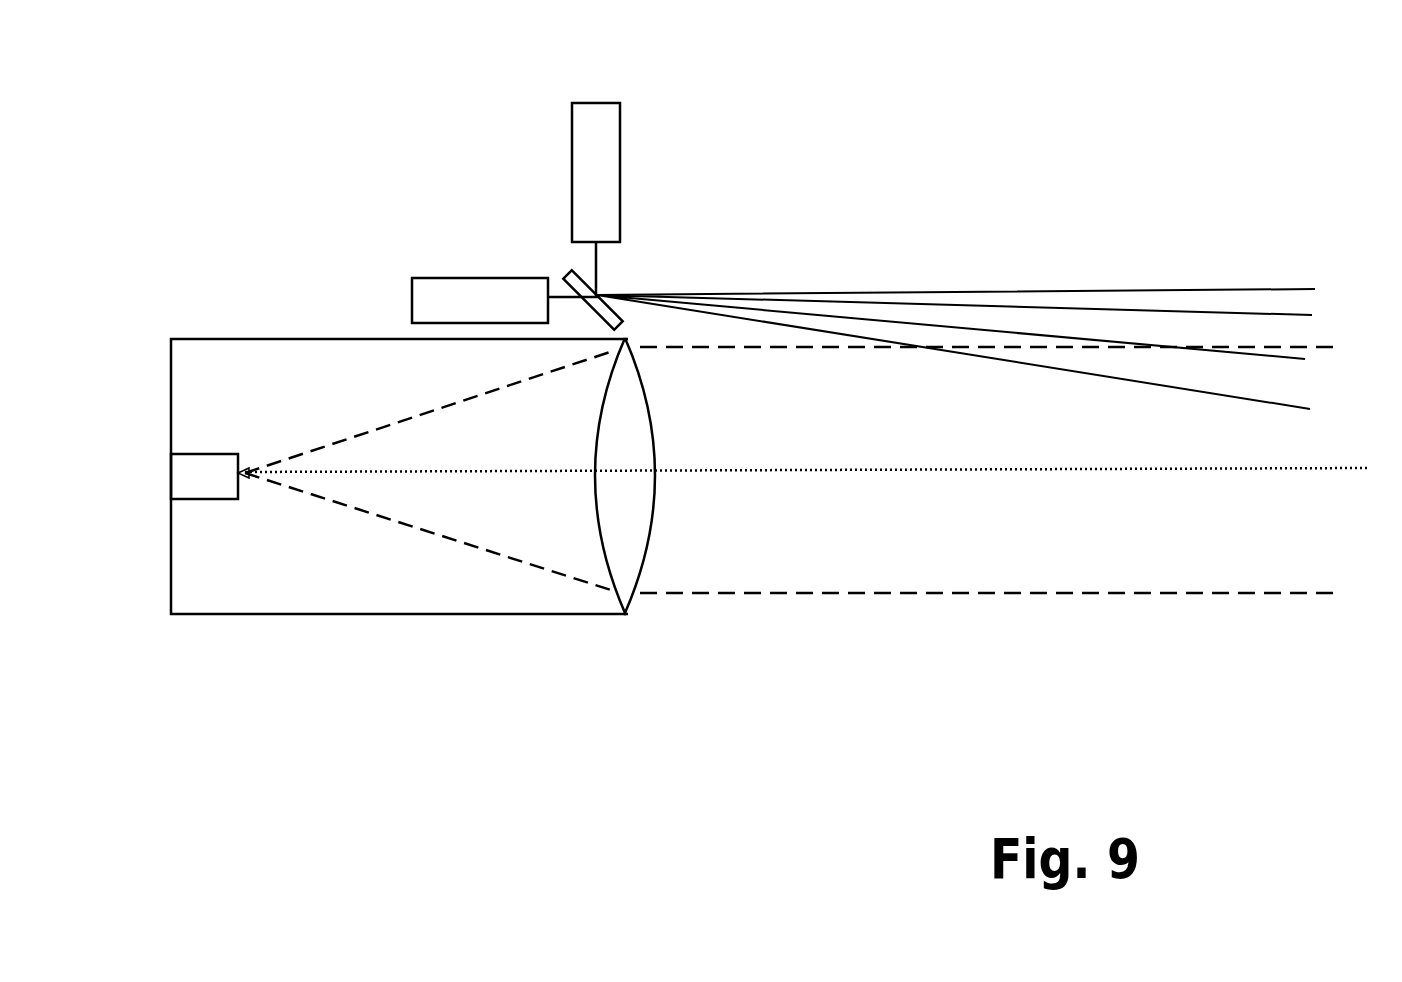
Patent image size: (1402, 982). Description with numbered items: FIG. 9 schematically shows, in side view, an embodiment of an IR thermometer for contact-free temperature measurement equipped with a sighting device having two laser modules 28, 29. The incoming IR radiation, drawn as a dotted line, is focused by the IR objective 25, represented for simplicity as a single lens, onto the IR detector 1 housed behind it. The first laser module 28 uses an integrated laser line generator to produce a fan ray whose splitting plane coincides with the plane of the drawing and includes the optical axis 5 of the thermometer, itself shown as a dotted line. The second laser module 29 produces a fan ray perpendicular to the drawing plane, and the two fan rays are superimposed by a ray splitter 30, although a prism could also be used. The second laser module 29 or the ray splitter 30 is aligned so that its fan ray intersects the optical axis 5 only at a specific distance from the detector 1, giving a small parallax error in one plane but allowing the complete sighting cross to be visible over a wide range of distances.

The IR detector 1 is at (200, 483).
The optical axis 5 is at (1353, 468).
The IR objective 25 is at (630, 613).
The first laser module 28 is at (427, 288).
The second laser module 29 is at (598, 103).
The ray splitter 30 is at (573, 275).